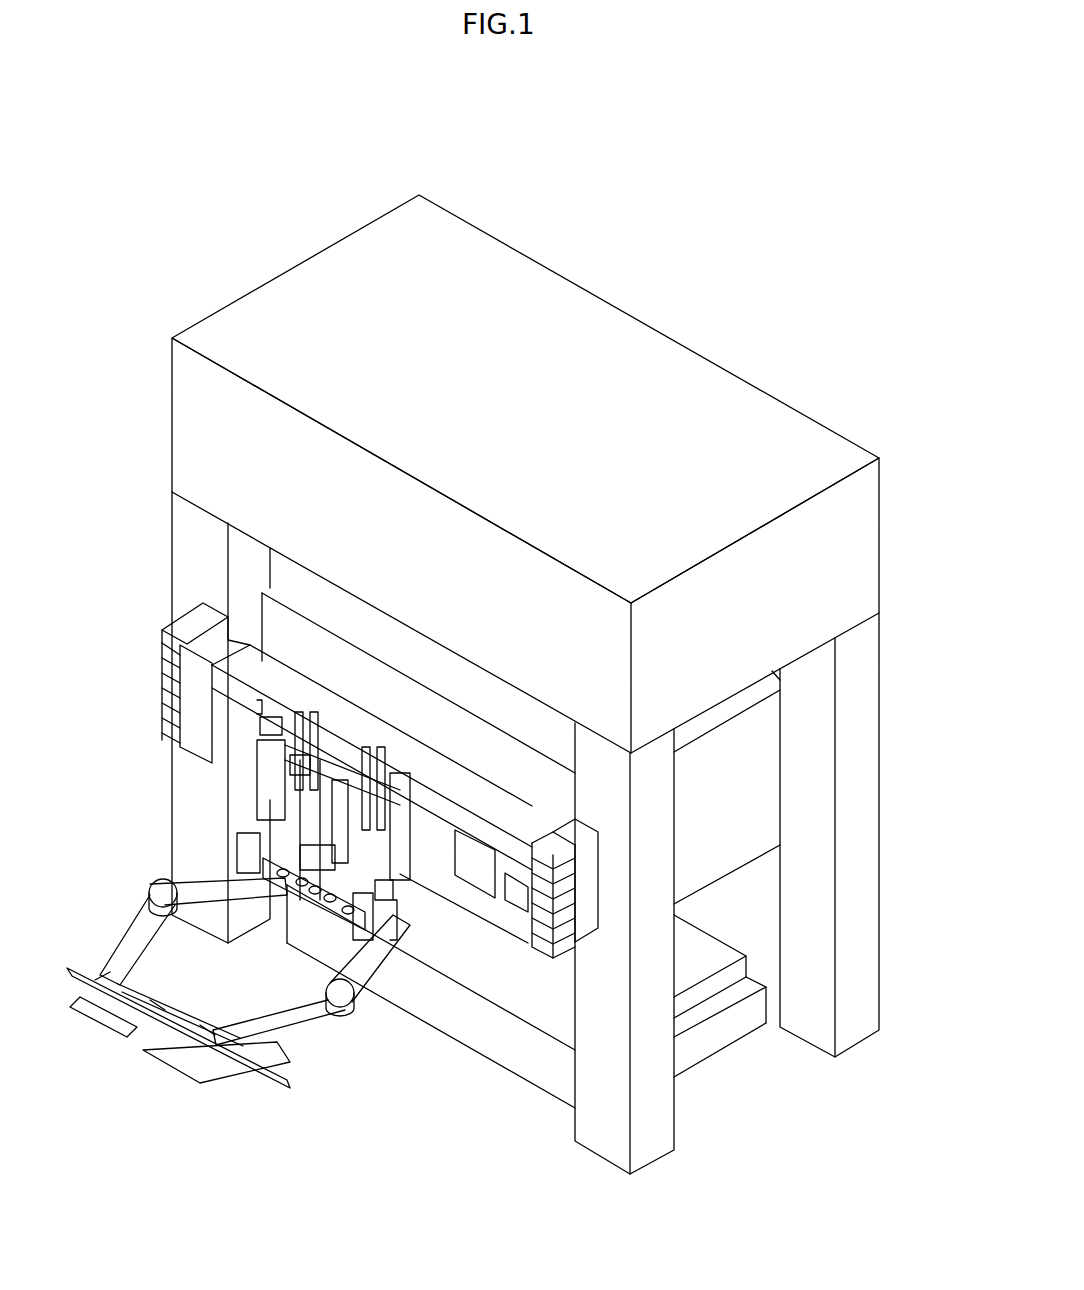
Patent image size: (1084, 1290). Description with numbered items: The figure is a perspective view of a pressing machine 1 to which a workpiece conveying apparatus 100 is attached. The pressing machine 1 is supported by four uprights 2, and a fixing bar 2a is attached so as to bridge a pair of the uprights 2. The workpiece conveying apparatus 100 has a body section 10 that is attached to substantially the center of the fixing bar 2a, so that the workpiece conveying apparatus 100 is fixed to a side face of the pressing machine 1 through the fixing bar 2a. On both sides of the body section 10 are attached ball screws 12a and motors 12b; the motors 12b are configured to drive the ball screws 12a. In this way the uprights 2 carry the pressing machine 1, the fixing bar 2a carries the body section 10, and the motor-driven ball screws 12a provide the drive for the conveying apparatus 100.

The pressing machine 1 is at (723, 357).
The uprights 2 is at (192, 540).
The fixing bar 2a is at (200, 667).
The body section 10 is at (380, 812).
The ball screws 12a is at (317, 857).
The motors 12b is at (300, 767).
The workpiece conveying apparatus 100 is at (347, 1032).